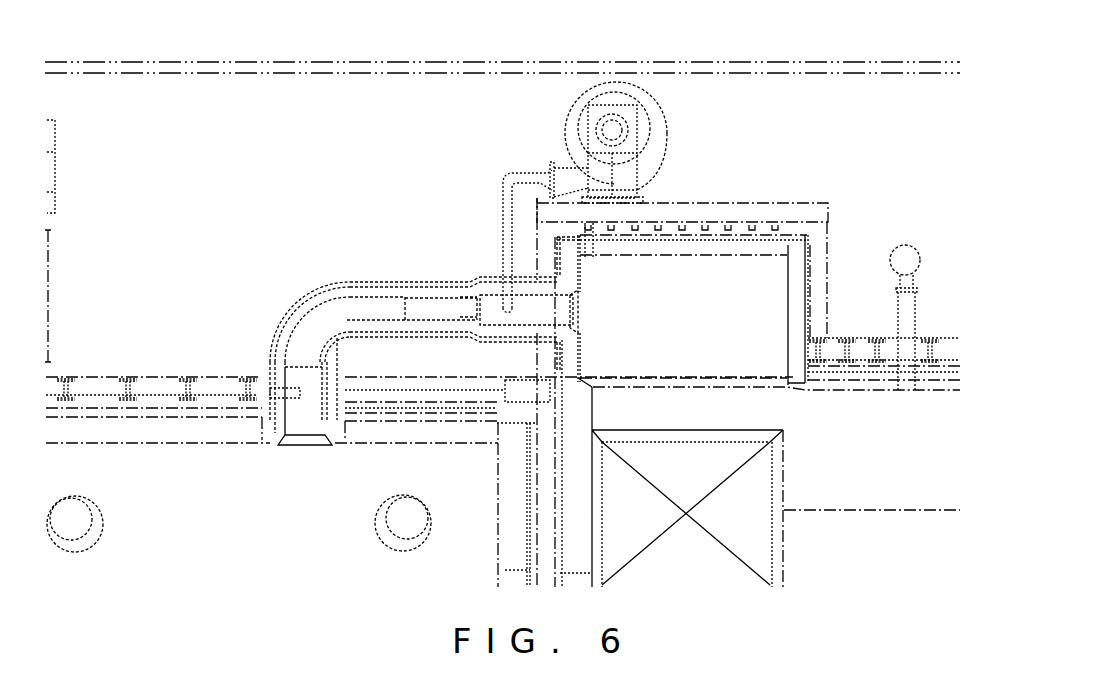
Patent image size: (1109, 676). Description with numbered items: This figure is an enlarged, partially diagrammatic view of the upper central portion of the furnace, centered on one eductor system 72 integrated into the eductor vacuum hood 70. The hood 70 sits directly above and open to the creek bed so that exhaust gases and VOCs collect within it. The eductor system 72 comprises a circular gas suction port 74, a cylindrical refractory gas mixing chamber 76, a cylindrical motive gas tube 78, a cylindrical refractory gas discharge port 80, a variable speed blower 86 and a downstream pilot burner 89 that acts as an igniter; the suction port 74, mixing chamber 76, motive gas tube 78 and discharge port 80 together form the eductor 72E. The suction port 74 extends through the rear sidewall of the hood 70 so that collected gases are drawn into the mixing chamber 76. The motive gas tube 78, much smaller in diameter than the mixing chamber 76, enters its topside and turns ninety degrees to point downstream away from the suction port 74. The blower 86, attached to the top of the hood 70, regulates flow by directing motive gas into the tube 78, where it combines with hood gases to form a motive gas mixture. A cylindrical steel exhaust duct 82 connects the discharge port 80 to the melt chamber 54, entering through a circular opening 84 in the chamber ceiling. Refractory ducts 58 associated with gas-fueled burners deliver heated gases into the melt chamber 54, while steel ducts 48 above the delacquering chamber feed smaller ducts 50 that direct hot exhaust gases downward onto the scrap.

The cylindrical steel duct 48 is at (893, 245).
The smaller cylindrical steel duct 50 is at (907, 310).
The melt chamber 54 is at (196, 596).
The cylindrical refractory duct 58 is at (88, 497).
The eductor vacuum hood 70 is at (727, 280).
The eductor system 72 is at (543, 123).
The eductor 72E is at (432, 208).
The gas suction port 74 is at (558, 307).
The gas mixing chamber 76 is at (490, 303).
The motive gas tube 78 is at (505, 213).
The gas discharge port 80 is at (462, 310).
The exhaust duct 82 is at (318, 285).
The circular opening 84 is at (308, 450).
The variable speed blower 86 is at (667, 133).
The pilot burner 89 is at (262, 385).